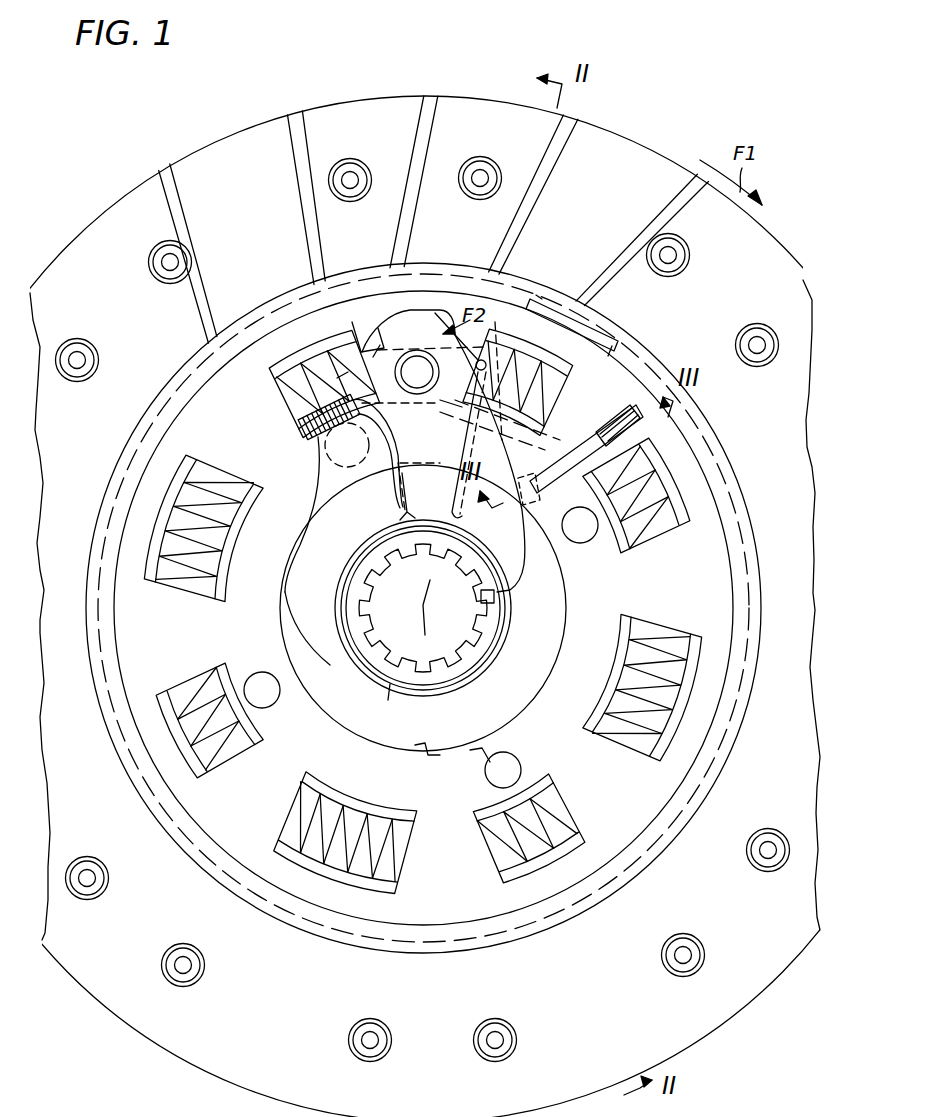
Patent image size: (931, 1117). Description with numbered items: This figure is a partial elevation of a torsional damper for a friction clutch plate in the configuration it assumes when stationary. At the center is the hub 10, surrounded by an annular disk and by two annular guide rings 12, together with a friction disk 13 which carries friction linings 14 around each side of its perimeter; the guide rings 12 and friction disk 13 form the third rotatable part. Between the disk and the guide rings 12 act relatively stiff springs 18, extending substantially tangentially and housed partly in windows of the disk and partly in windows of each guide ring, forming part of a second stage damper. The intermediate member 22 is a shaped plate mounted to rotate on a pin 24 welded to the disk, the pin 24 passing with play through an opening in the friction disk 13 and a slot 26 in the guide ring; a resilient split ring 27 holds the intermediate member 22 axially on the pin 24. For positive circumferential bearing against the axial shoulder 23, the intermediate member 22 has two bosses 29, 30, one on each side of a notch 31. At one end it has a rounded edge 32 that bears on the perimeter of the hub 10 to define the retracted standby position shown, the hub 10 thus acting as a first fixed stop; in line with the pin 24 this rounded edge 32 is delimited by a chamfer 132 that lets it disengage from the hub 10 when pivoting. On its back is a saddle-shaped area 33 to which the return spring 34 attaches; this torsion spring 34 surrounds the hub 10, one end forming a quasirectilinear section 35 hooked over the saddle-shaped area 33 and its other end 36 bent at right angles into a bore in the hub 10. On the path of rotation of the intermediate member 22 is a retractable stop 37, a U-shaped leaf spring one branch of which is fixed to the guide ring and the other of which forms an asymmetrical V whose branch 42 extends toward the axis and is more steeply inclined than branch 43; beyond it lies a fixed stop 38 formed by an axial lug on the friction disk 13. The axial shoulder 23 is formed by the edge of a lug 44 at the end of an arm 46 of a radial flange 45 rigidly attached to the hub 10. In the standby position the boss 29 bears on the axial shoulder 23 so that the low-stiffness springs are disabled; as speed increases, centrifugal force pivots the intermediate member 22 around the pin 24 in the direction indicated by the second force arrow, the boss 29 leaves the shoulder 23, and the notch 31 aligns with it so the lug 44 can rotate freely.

The hub 10 is at (387, 660).
The annular guide rings 12 is at (256, 811).
The friction disk 13 is at (97, 222).
The friction linings 14 is at (736, 307).
The springs 18 is at (529, 380).
The intermediate member 22 is at (543, 445).
The axial shoulder 23 is at (385, 445).
The pin 24 is at (416, 358).
The slot 26 is at (433, 413).
The resilient split ring 27 is at (418, 396).
The boss 29 is at (345, 372).
The boss 30 is at (360, 346).
The notch 31 is at (375, 355).
The rounded edge 32 is at (488, 556).
The saddle-shaped area 33 is at (476, 369).
The spring 34 is at (333, 592).
The quasirectilinear section 35 is at (503, 373).
The other end 36 is at (480, 600).
The retractable stop 37 is at (656, 458).
The fixed stop 38 is at (613, 340).
The branch 42 is at (597, 463).
The branch 43 is at (628, 436).
The lug 44 is at (305, 432).
The radial flange 45 is at (442, 732).
The arm 46 is at (324, 462).
The chamfer 132 is at (412, 466).